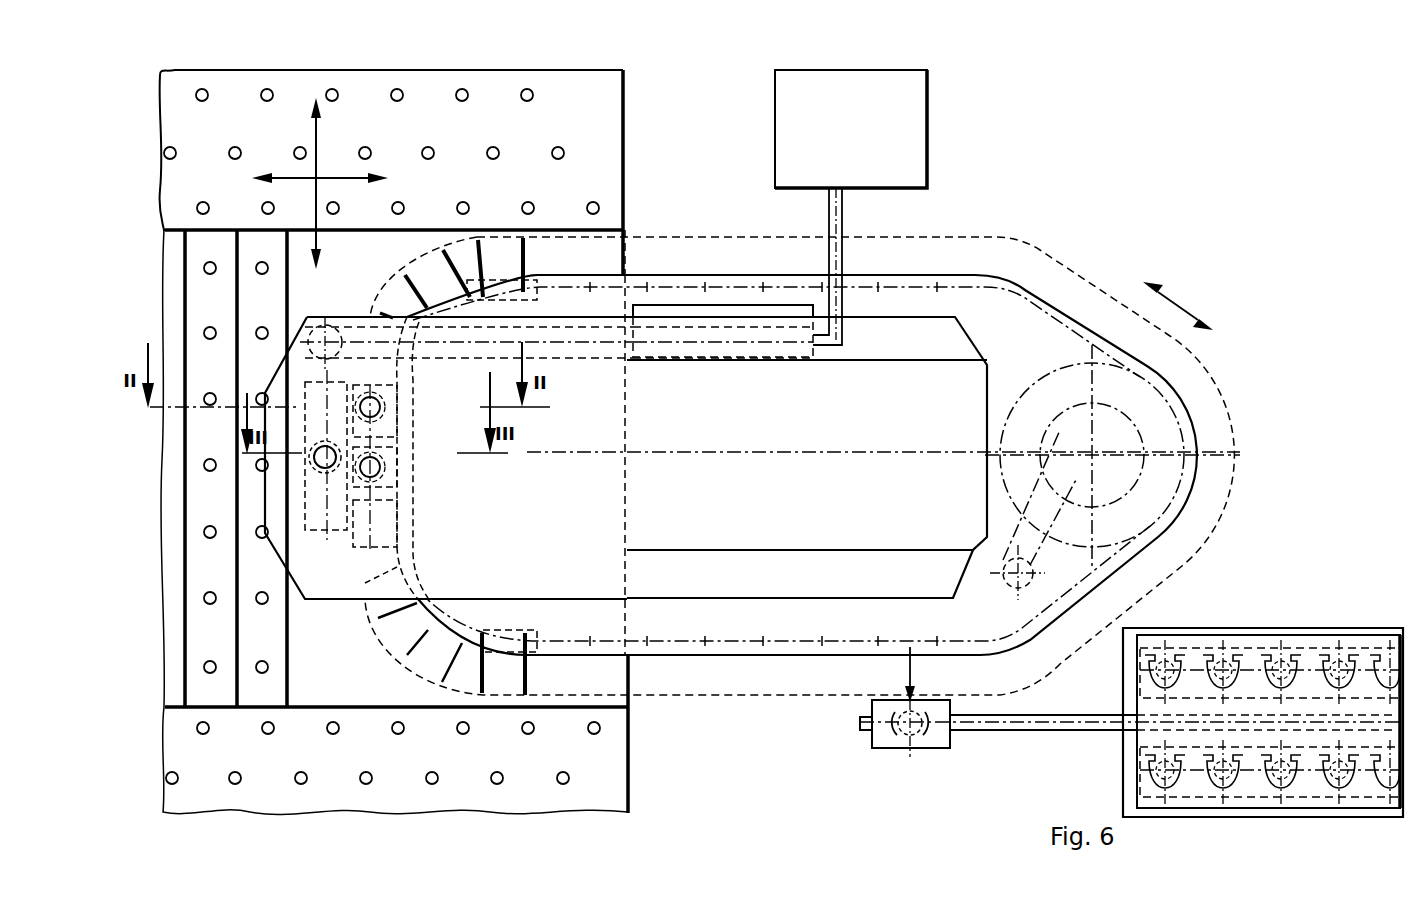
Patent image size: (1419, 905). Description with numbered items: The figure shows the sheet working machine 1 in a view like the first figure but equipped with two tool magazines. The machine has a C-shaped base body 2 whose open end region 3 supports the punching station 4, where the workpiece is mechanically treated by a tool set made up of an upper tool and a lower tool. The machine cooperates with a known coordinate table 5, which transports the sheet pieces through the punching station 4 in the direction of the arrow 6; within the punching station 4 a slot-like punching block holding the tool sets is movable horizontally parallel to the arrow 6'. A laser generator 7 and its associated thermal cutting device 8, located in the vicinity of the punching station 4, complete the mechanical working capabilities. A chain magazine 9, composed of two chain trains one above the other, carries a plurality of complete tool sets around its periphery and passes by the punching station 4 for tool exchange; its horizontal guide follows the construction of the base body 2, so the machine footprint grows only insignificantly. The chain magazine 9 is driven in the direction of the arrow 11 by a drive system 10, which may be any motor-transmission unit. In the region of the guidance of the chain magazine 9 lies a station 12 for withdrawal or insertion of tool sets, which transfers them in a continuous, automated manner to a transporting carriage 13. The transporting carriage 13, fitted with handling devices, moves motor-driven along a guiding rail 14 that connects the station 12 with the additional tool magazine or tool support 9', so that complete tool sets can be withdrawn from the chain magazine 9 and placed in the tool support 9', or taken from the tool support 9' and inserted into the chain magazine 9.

The sheet working machine 1 is at (960, 382).
The base body 2 is at (765, 513).
The open end region 3 is at (330, 577).
The punching station 4 is at (312, 466).
The coordinate table 5 is at (582, 140).
The arrow 6 is at (325, 183).
The arrow 6' is at (352, 195).
The laser generator 7 is at (895, 113).
The thermal cutting device 8 is at (312, 340).
The chain magazine 9 is at (536, 437).
The tool magazine or tool support 9' is at (1263, 688).
The drive system 10 is at (1045, 548).
The arrow 11 is at (1177, 285).
The station 12 is at (908, 673).
The transporting carriage 13 is at (888, 738).
The guiding rail 14 is at (1043, 727).